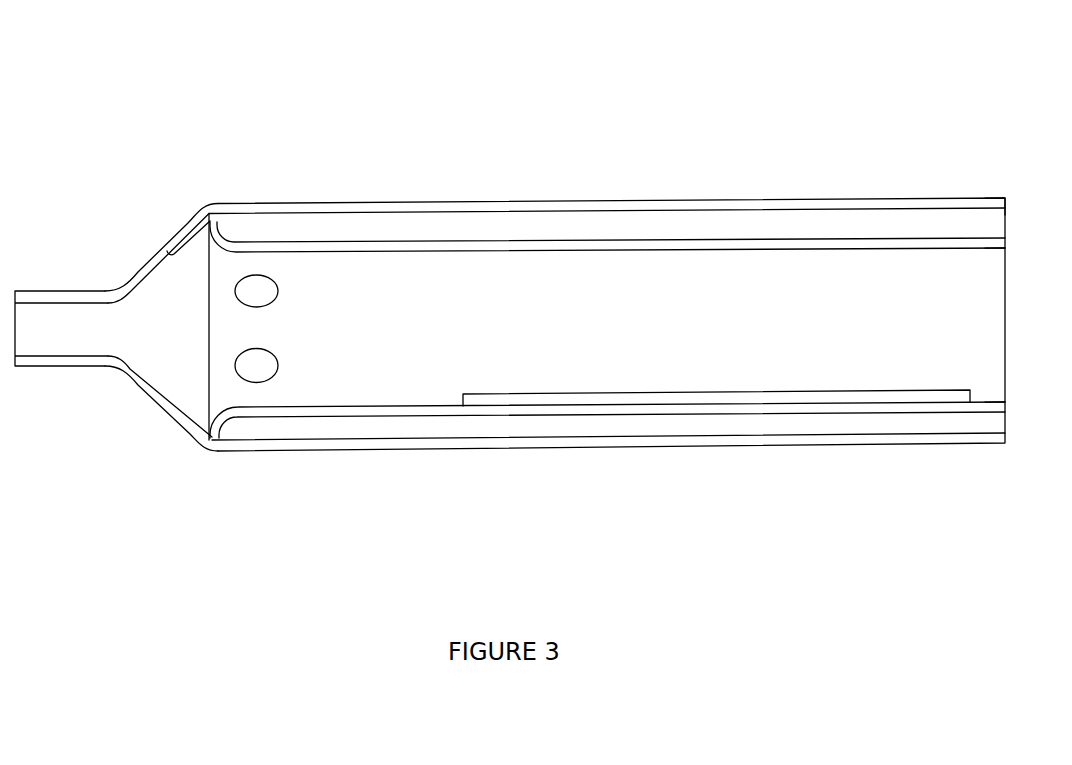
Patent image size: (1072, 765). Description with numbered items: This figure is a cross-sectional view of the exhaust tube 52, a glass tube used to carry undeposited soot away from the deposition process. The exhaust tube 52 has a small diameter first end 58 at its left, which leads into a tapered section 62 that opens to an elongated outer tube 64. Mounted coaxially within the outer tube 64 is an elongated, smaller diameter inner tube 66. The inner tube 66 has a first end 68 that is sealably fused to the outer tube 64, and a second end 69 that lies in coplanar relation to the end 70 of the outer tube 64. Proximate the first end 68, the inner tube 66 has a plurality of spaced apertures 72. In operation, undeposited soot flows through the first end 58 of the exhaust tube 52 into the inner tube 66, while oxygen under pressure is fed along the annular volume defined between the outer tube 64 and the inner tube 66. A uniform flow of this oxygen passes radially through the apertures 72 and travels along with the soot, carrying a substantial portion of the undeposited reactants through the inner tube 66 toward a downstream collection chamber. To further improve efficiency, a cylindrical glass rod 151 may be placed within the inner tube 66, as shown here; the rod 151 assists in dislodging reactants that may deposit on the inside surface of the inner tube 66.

The exhaust tube 52 is at (192, 557).
The first end 58 is at (83, 370).
The tapered section 62 is at (167, 413).
The outer tube 64 is at (463, 202).
The inner tube 66 is at (528, 252).
The first end 68 is at (175, 260).
The second end 69 is at (1006, 243).
The end 70 is at (1007, 198).
The apertures 72 is at (277, 352).
The cylindrical glass rod 151 is at (705, 392).